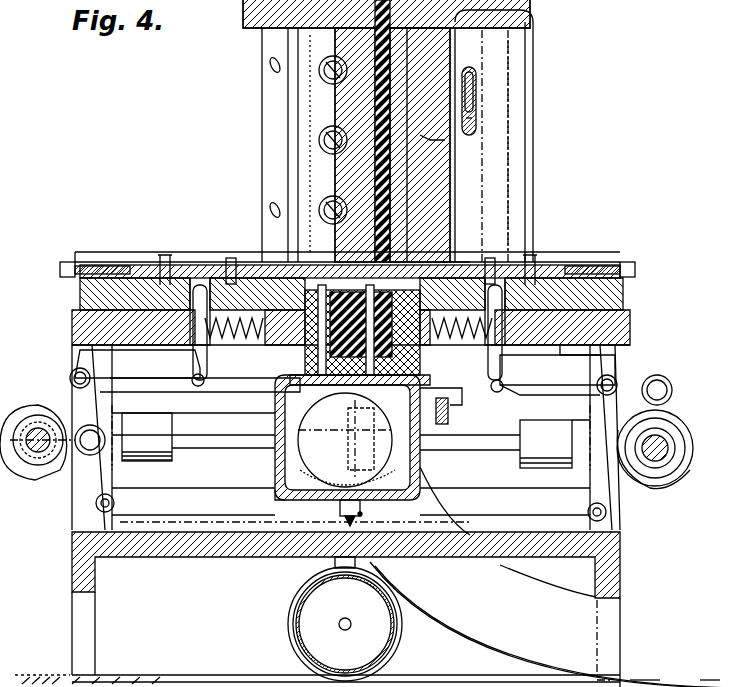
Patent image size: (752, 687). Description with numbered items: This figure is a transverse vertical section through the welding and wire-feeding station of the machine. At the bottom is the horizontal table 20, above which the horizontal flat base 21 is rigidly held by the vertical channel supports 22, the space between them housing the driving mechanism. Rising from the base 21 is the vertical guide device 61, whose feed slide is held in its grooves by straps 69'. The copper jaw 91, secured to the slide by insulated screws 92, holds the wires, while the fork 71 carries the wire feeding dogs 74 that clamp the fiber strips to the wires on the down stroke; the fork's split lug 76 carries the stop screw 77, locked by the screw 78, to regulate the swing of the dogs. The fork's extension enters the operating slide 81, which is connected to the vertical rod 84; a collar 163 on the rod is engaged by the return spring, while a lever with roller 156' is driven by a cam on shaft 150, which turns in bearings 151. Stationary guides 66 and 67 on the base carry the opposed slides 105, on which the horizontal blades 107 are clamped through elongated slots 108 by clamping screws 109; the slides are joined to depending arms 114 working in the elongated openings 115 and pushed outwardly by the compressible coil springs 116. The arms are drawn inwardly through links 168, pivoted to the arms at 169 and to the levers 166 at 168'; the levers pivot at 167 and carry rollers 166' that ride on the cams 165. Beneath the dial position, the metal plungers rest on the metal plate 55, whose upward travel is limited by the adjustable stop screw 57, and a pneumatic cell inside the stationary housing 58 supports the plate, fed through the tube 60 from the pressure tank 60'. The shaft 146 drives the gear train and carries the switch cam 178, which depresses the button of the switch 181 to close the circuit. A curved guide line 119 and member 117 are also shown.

The jaw 91 is at (243, 18).
The screws 92 is at (320, 66).
The straps 69' is at (300, 145).
The wire feeding dogs 74 is at (392, 112).
The vertical guide device 61 is at (510, 40).
The split lug 76 is at (468, 66).
The screw 78 is at (470, 80).
The stop screw 77 is at (477, 80).
The operating slide 81 is at (497, 118).
The fork 71 is at (420, 135).
The horizontal blades 107 is at (222, 242).
The elongated slots 108 is at (230, 262).
The clamping screws 109 is at (238, 260).
The collar 163 is at (455, 260).
The stationary guide 66 is at (72, 258).
The opposed slides 105 is at (80, 290).
The horizontal flat base 21 is at (72, 326).
The depending arms 114 is at (200, 328).
The elongated openings 115 is at (344, 332).
The bearings 151 is at (580, 343).
The compressible coil springs 116 is at (350, 335).
The links 168 is at (312, 384).
The pivot 169 is at (200, 388).
The pivot 168' is at (370, 373).
The roller 156' is at (391, 415).
The vertical channel supports 22 is at (72, 516).
The shaft 146 is at (230, 445).
The rollers 166' is at (347, 440).
The levers 166 is at (351, 448).
The pivot 167 is at (148, 500).
The stationary housing 58 is at (285, 462).
The metal plate 55 is at (345, 395).
The switch cam 178 is at (345, 460).
The adjustable stop screw 57 is at (275, 495).
The switch 181 is at (340, 510).
The vertical rod 84 is at (450, 410).
The horizontal table 20 is at (72, 560).
The tube 60 is at (338, 619).
The pressure tank 60' is at (327, 624).
The guide curve 119 is at (490, 655).
The shaft 150 is at (670, 440).
The cams 165 is at (688, 468).
The member 117 is at (658, 681).
The stationary guide 67 is at (711, 681).